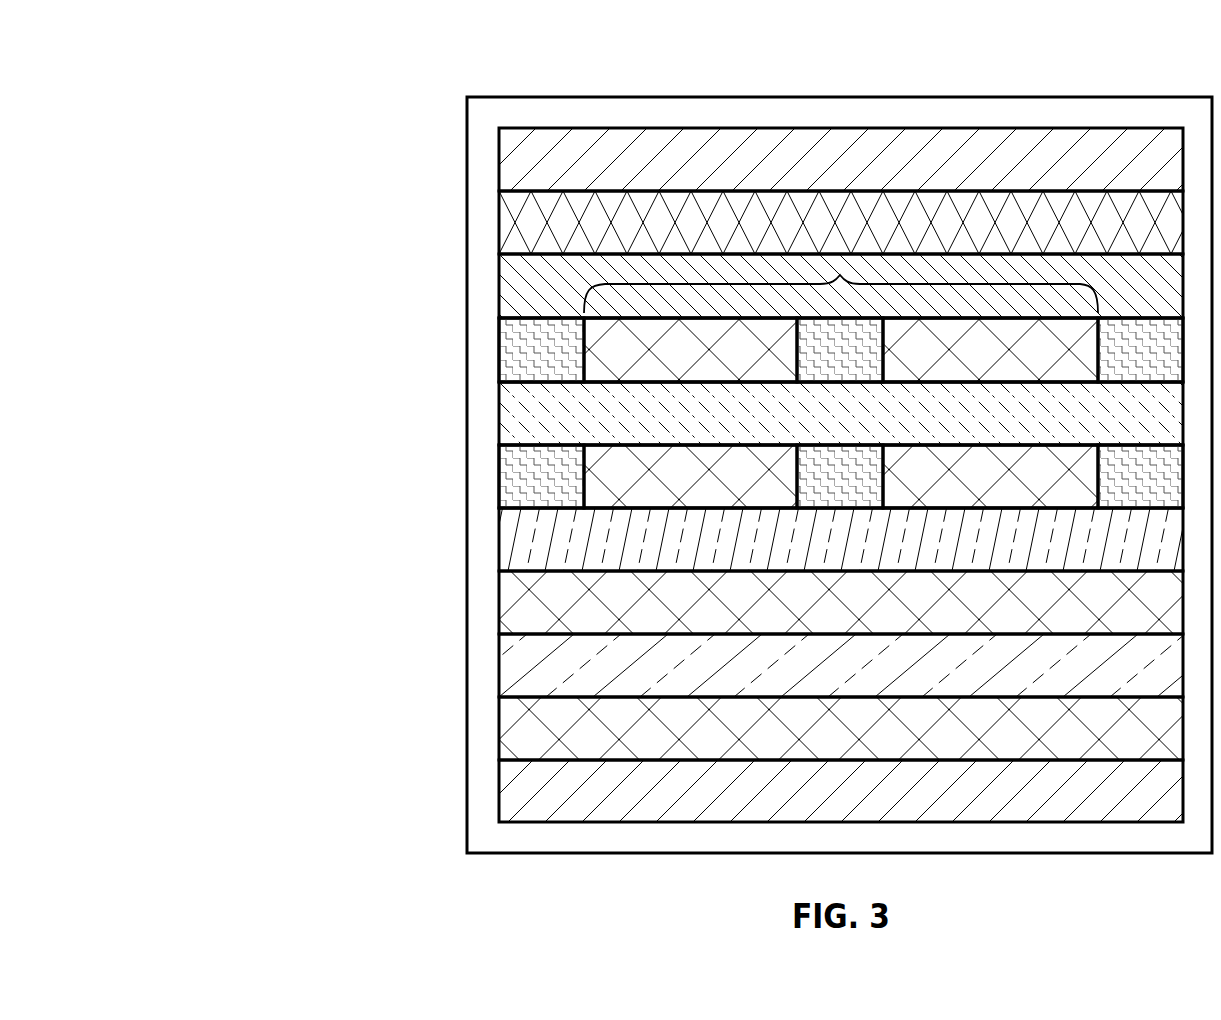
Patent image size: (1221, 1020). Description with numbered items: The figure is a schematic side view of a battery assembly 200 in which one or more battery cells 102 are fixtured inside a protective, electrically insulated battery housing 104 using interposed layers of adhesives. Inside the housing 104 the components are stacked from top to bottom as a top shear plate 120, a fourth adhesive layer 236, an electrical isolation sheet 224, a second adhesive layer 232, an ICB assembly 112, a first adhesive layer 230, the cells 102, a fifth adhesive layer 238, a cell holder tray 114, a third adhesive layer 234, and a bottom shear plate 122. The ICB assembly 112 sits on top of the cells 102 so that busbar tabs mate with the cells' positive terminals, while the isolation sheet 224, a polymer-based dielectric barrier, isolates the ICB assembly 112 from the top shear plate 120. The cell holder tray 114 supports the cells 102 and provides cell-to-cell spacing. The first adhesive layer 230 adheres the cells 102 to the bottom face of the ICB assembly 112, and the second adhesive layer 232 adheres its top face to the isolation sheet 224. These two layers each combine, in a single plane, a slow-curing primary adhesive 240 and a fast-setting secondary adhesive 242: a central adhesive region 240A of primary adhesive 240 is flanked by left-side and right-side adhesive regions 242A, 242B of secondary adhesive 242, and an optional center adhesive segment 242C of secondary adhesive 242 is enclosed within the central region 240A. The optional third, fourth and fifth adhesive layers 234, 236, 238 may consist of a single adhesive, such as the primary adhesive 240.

The battery assembly 200 is at (250, 60).
The battery housing 104 is at (493, 97).
The top shear plate 120 is at (499, 134).
The fourth adhesive layer 236 is at (499, 197).
The electrical isolation sheet 224 is at (499, 260).
The second adhesive layer 232 is at (499, 324).
The ICB assembly 112 is at (499, 388).
The first adhesive layer 230 is at (499, 450).
The battery cell 102 is at (499, 513).
The fifth adhesive layer 238 is at (499, 576).
The cell holder tray 114 is at (499, 639).
The third adhesive layer 234 is at (499, 702).
The bottom shear plate 122 is at (499, 765).
The primary adhesive 240 is at (718, 366).
The secondary adhesive 242 is at (841, 278).
The central adhesive region 240A is at (840, 277).
The left-side adhesive region 242A is at (575, 262).
The right-side adhesive region 242B is at (1108, 262).
The center adhesive segment 242C is at (873, 262).